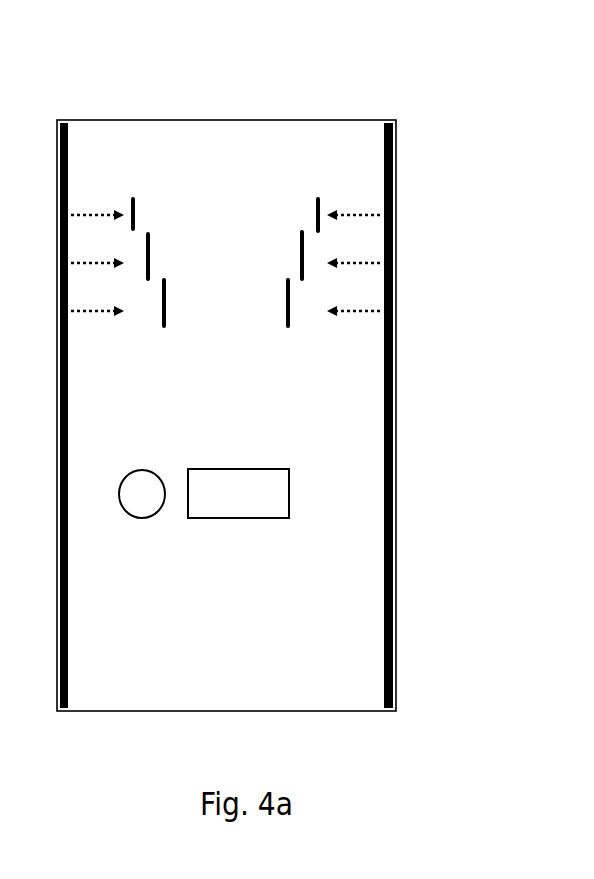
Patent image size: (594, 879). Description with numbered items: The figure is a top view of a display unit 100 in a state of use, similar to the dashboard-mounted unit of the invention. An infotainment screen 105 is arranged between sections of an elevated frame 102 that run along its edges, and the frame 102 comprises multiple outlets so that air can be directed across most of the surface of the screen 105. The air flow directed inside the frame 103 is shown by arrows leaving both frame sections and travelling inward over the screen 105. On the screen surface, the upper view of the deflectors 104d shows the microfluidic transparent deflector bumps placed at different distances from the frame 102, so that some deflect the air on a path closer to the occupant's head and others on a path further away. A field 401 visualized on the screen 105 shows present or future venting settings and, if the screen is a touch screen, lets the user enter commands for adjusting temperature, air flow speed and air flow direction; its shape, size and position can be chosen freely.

The display unit 100 is at (133, 102).
The elevated frame 102 is at (393, 690).
The air flow directed inside frame 103 is at (391, 199).
The upper view of deflectors 104d is at (135, 198).
The infotainment screen 105 is at (367, 553).
The possible air ventilation controls over touch screen 401 is at (290, 471).